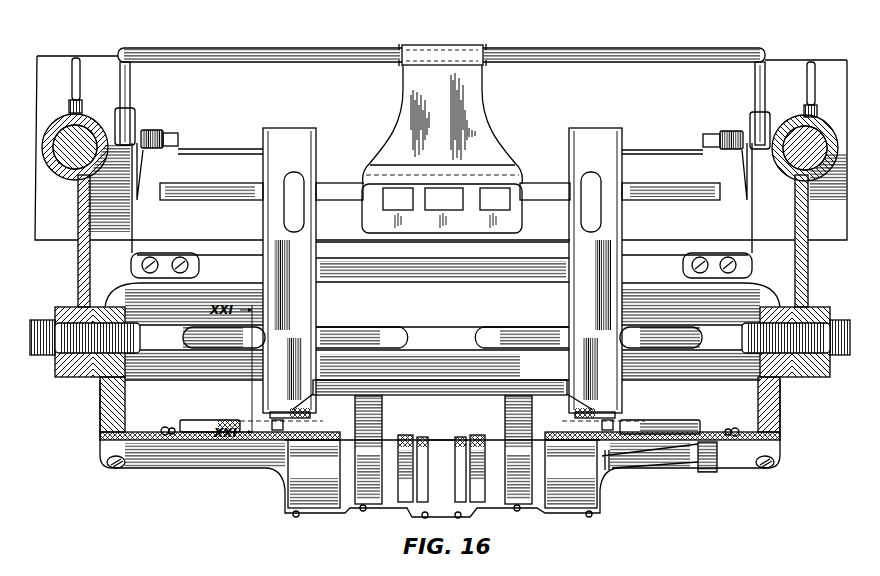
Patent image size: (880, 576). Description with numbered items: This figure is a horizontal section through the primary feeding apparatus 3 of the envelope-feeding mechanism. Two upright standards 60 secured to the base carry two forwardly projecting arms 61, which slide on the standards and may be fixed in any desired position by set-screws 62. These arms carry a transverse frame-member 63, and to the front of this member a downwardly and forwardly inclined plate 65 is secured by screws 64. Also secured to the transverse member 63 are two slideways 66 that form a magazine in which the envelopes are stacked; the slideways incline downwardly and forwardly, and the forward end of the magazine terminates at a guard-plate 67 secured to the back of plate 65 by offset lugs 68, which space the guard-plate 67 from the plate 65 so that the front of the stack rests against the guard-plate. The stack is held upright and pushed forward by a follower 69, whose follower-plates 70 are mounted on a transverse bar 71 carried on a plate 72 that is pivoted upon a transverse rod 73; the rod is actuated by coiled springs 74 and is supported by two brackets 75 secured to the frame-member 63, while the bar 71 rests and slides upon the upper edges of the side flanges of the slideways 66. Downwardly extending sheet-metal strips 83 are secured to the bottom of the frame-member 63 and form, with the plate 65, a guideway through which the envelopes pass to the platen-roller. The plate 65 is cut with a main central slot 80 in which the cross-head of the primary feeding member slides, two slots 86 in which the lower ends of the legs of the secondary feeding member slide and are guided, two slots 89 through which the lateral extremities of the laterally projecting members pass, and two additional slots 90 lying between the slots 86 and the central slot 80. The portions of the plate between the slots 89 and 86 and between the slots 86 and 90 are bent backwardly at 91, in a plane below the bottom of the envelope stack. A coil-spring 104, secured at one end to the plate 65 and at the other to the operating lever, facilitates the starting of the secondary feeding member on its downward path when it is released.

The primary feeding apparatus 3 is at (440, 379).
The upright standard 60 is at (68, 130).
The forwardly projecting arm 61 is at (78, 268).
The set-screw 62 is at (82, 70).
The transverse frame-member 63 is at (442, 311).
The screw 64 is at (112, 470).
The inclined plate 65 is at (165, 468).
The slideway 66 is at (316, 305).
The guard-plate 67 is at (190, 420).
The offset lug 68 is at (160, 430).
The follower 69 is at (483, 132).
The follower-plate 70 is at (265, 222).
The transverse bar 71 is at (338, 185).
The plate 72 is at (403, 111).
The transverse rod 73 is at (333, 48).
The coiled spring 74 is at (155, 133).
The bracket 75 is at (137, 223).
The slot 80 is at (443, 440).
The sheet-metal strip 83 is at (372, 392).
The slot 86 is at (388, 490).
The slot 89 is at (345, 440).
The slot 90 is at (415, 510).
The backwardly bent portion 91 is at (400, 445).
The coil-spring 104 is at (717, 462).